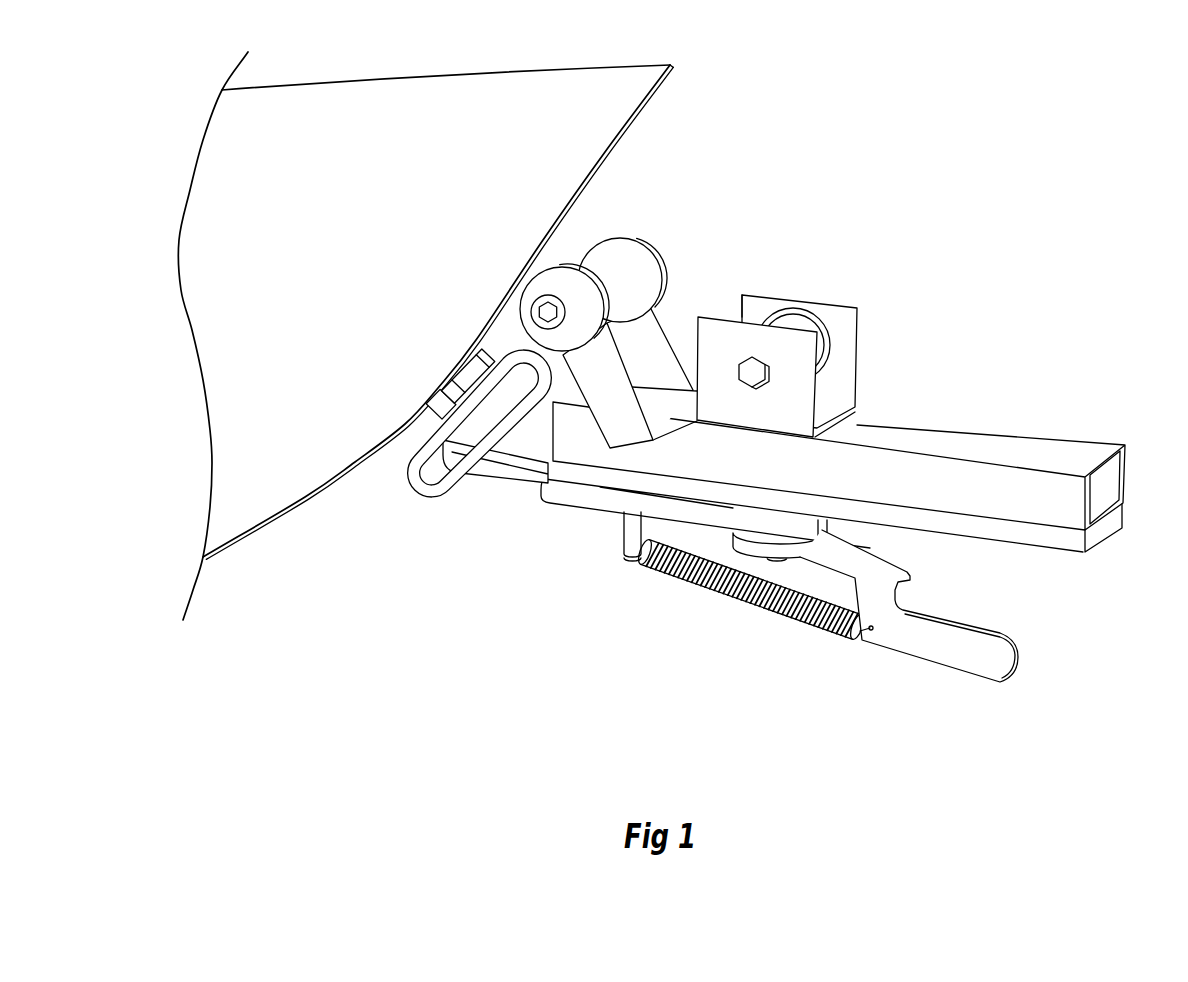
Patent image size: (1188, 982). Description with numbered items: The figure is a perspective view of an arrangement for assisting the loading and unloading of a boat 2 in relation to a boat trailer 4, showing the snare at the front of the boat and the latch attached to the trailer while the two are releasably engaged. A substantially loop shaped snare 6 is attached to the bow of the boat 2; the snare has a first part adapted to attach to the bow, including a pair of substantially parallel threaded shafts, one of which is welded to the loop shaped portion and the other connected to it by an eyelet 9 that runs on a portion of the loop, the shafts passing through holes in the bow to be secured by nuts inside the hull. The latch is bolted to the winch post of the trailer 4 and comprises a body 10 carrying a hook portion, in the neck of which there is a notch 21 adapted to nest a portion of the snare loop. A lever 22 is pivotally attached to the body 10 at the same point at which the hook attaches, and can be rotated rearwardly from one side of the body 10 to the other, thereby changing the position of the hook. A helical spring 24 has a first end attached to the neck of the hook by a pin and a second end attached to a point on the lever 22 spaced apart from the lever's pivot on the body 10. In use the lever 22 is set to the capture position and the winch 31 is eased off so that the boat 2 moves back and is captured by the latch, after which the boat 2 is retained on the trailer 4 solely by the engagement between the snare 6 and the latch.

The boat 2 is at (620, 118).
The boat trailer 4 is at (1012, 478).
The snare 6 is at (432, 498).
The eyelet 9 is at (447, 407).
The body 10 is at (1060, 545).
The notch 21 is at (485, 482).
The lever 22 is at (966, 657).
The helical spring 24 is at (717, 590).
The winch 31 is at (848, 326).